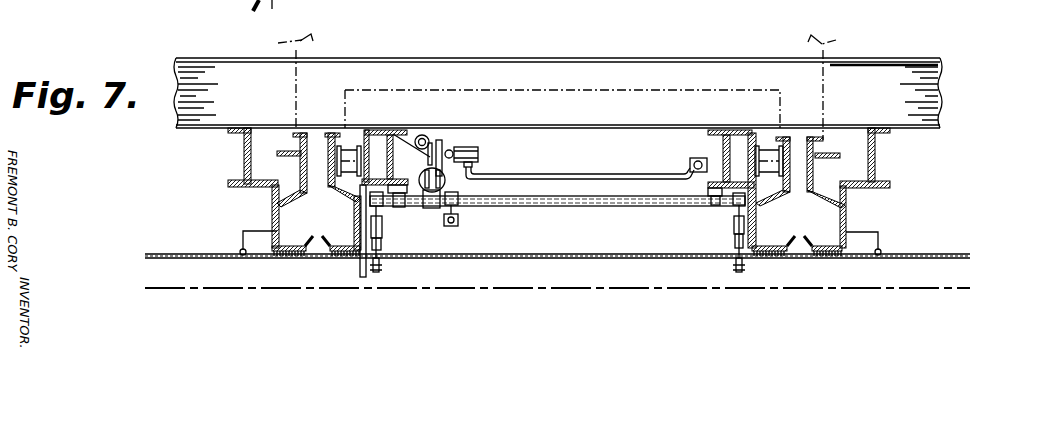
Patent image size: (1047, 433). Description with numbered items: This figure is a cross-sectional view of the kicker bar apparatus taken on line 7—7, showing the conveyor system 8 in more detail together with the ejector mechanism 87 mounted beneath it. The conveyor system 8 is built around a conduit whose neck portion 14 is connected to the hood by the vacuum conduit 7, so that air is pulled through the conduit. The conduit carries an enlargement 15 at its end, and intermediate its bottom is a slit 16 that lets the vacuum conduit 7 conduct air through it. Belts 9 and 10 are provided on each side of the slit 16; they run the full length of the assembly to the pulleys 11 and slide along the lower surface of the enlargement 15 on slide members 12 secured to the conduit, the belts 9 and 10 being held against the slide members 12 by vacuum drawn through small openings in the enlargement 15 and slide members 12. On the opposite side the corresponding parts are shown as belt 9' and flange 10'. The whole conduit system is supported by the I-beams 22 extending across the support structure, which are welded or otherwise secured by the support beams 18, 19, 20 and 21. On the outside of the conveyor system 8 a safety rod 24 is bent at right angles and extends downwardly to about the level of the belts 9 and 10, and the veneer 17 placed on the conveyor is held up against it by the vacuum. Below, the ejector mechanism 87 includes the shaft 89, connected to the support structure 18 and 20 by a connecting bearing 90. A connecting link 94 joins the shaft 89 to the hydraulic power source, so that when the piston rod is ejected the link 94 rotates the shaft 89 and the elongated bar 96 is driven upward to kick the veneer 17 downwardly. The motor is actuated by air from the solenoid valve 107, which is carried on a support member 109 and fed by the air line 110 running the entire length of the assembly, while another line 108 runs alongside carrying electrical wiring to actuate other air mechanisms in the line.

The vacuum conduit 7 is at (563, 85).
The conveyor system 8 is at (297, 167).
The belt 9 is at (305, 191).
The roller 9' is at (779, 130).
The belt 10 is at (354, 207).
The flange of hanger 10' is at (814, 192).
The pulley 11 is at (338, 180).
The slide member 12 is at (316, 250).
The neck portion 14 is at (307, 150).
The enlargement 15 is at (280, 220).
The slit 16 is at (320, 242).
The veneer 17 is at (170, 290).
The support beam 18 is at (255, 188).
The support beam 19 is at (366, 262).
The support beam 20 is at (244, 142).
The support beam 21 is at (383, 146).
The I-beam 22 is at (246, 98).
The safety rod 24 is at (242, 232).
The ejector mechanism 87 is at (527, 212).
The shaft 89 is at (570, 208).
The connecting bearing 90 is at (396, 207).
The connecting link 94 is at (440, 220).
The elongated bar 96 is at (380, 268).
The solenoid valve 107 is at (479, 152).
The line 108 is at (583, 165).
The support member 109 is at (441, 140).
The air line 110 is at (423, 134).